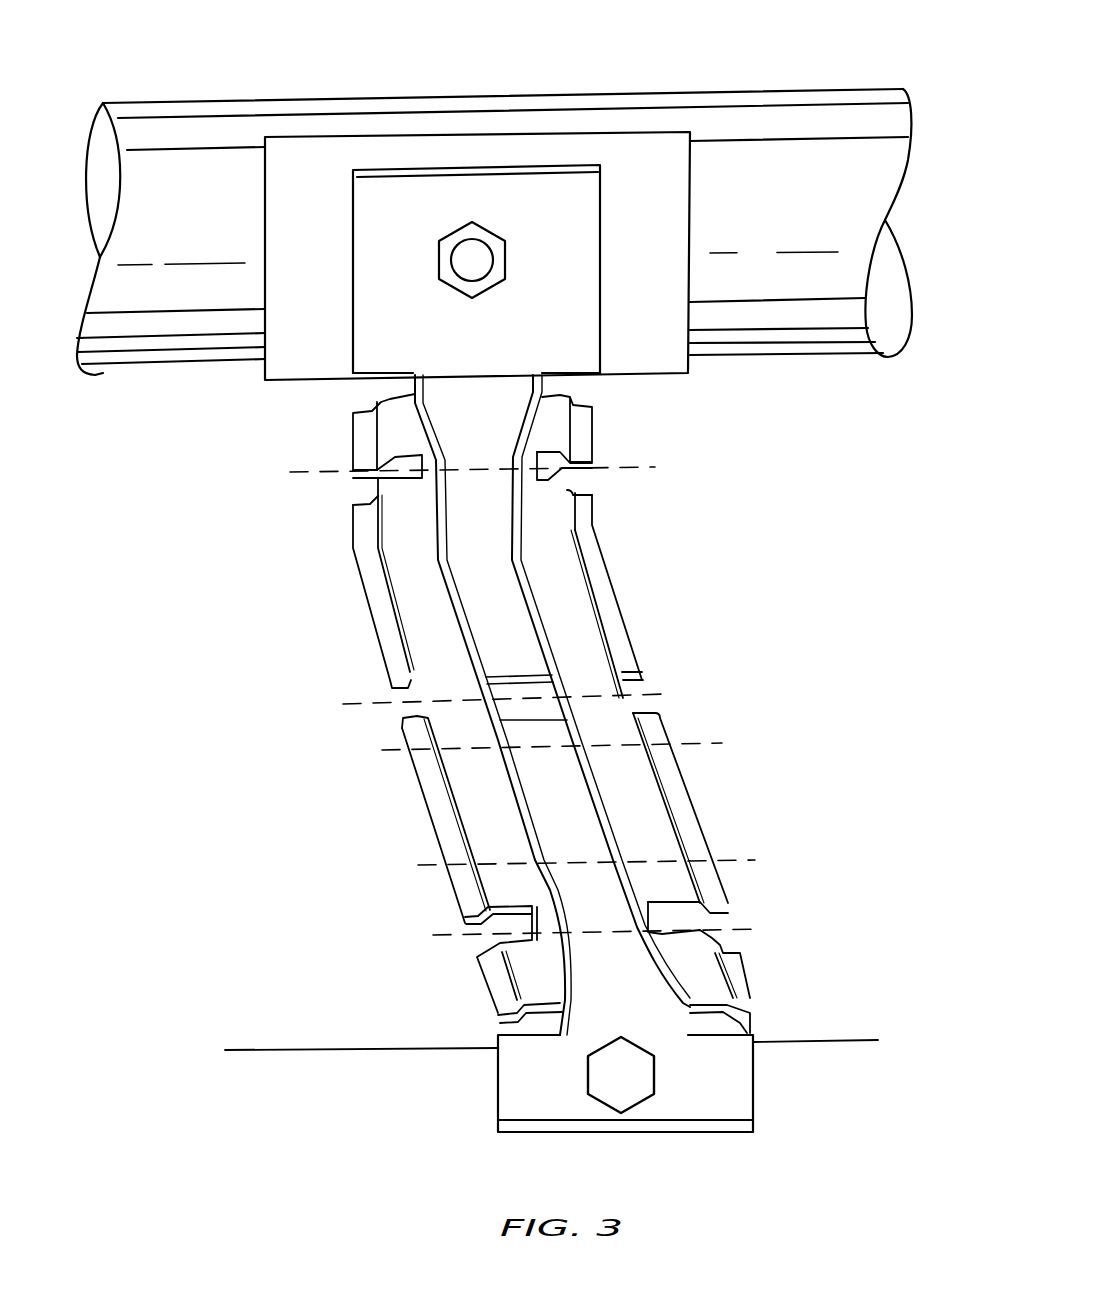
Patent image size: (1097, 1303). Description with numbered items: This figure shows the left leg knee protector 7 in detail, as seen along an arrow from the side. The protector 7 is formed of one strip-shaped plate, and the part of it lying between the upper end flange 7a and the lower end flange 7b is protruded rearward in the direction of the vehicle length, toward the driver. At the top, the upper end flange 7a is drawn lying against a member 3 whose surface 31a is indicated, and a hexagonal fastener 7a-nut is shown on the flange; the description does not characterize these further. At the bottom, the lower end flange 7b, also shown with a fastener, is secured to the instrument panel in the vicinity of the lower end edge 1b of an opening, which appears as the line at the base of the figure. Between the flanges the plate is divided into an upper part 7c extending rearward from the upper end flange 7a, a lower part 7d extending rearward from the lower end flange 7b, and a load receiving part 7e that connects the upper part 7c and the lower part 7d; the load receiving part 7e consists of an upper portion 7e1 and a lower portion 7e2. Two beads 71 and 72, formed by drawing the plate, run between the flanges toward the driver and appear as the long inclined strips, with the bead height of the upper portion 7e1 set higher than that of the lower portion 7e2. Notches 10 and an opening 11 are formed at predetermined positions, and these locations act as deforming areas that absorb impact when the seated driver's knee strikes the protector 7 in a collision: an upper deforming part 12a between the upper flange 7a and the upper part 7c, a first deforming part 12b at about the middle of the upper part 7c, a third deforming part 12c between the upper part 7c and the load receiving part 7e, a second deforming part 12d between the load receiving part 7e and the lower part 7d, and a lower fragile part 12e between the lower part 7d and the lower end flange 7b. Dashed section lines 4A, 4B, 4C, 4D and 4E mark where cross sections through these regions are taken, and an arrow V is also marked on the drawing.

The pipe 3 is at (760, 88).
The pipe surface 31a is at (586, 128).
The left leg knee protector 7 is at (270, 623).
The upper end flange 7a is at (600, 235).
The nut on upper plate 7a-nut is at (472, 260).
The lower end flange 7b is at (755, 1088).
The upper part 7c is at (608, 575).
The lower part 7d is at (747, 977).
The load receiving part 7e is at (698, 808).
The upper portion of load receiving part 7e1 is at (662, 720).
The lower portion of load receiving part 7e2 is at (723, 887).
The bead 71 is at (643, 788).
The bead 72 is at (440, 800).
The notches 10 is at (360, 407).
The opening 11 is at (527, 680).
The upper fragile or deforming part 12a is at (330, 395).
The first fragile or deforming part 12b is at (335, 490).
The third fragile or deforming part 12c is at (382, 692).
The second fragile or deforming part 12d is at (435, 949).
The lower fragile part 12e is at (465, 1029).
The lower end edge of opening 1b is at (262, 1050).
The section line 4A is at (475, 470).
The section line 4B is at (548, 749).
The section line 4C is at (499, 701).
The section line 4D is at (583, 861).
The section line 4E is at (590, 943).
The viewing direction V is at (218, 760).